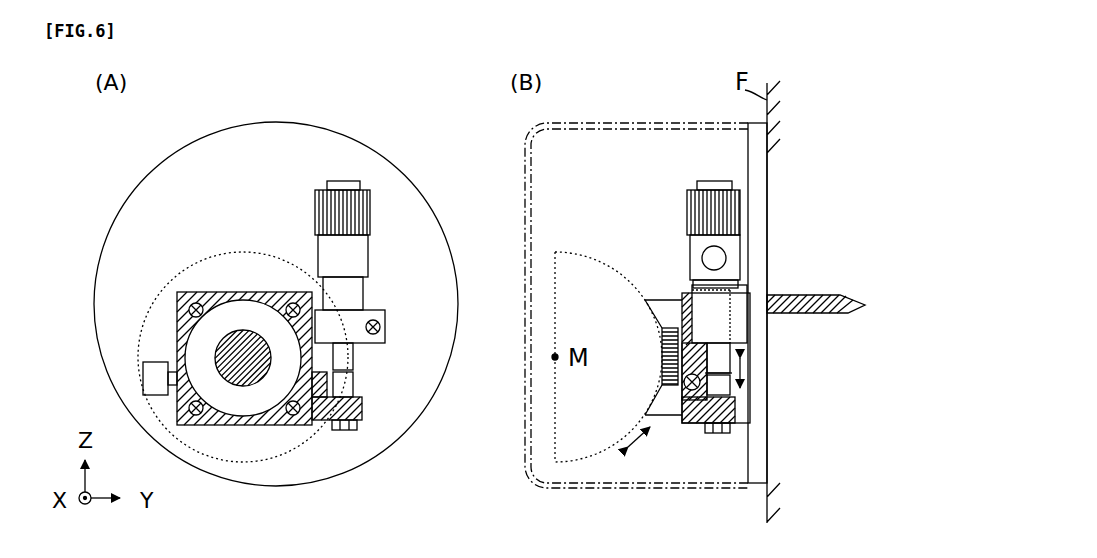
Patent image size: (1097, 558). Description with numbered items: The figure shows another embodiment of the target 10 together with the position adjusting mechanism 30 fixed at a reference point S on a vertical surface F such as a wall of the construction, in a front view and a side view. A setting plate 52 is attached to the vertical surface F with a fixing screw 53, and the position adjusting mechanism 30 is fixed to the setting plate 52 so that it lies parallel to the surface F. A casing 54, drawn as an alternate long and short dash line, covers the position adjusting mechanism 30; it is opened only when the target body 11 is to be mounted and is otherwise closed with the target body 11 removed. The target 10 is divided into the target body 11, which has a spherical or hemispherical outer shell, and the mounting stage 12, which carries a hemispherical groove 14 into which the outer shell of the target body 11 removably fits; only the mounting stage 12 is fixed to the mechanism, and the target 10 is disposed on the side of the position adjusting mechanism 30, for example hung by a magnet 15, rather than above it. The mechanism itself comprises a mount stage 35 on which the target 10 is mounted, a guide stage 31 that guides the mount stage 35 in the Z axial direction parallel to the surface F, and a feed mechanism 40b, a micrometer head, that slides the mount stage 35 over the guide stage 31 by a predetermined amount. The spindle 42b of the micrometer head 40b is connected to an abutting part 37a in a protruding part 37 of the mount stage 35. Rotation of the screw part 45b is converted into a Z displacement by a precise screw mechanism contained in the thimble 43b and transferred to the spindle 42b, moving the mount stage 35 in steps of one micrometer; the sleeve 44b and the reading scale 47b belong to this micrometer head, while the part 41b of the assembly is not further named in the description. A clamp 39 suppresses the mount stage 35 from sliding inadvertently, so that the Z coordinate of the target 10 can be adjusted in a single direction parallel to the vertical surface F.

The target 10 is at (200, 255).
The target body 11 is at (243, 330).
The mounting stage 12 is at (177, 353).
The hemispherical groove 14 is at (650, 315).
The magnet 15 is at (215, 327).
The position adjusting mechanism 30 is at (303, 237).
The guide stage 31 is at (745, 288).
The mount stage 35 is at (190, 360).
The protruding part 37 is at (360, 410).
The abutting part 37a is at (350, 385).
The clamp 39 is at (143, 380).
The feed mechanism (micrometer head) 40b is at (609, 265).
The mounting block 41b is at (400, 308).
The spindle 42b is at (345, 355).
The thimble 43b is at (745, 237).
The sleeve 44b is at (717, 302).
The screw part 45b is at (743, 195).
The reading scale 47b is at (728, 268).
The setting plate 52 is at (325, 140).
The fixing screw 53 is at (833, 292).
The casing 54 is at (623, 128).